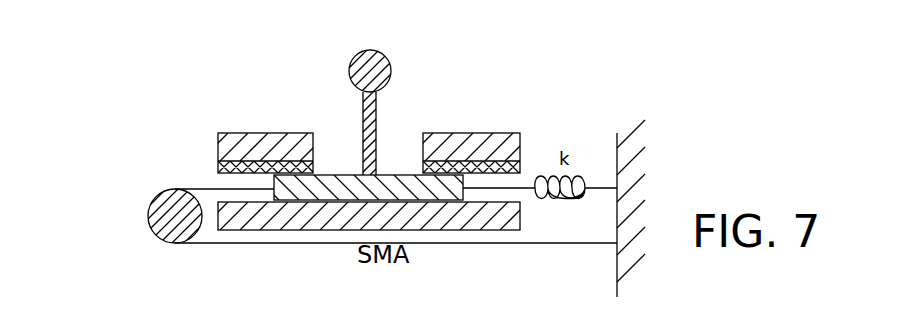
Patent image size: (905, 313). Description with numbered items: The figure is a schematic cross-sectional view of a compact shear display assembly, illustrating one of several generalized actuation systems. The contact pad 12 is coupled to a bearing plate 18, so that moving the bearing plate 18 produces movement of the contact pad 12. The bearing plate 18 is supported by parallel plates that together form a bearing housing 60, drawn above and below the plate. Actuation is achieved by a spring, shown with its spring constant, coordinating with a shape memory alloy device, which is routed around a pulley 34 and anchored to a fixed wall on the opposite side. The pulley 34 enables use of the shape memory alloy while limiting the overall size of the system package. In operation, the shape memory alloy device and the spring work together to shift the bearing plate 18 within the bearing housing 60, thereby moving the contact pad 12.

The contact pad 12 is at (355, 58).
The bearing plate 18 is at (340, 173).
The pulley 34 is at (162, 218).
The bearing housing 60 is at (520, 140).